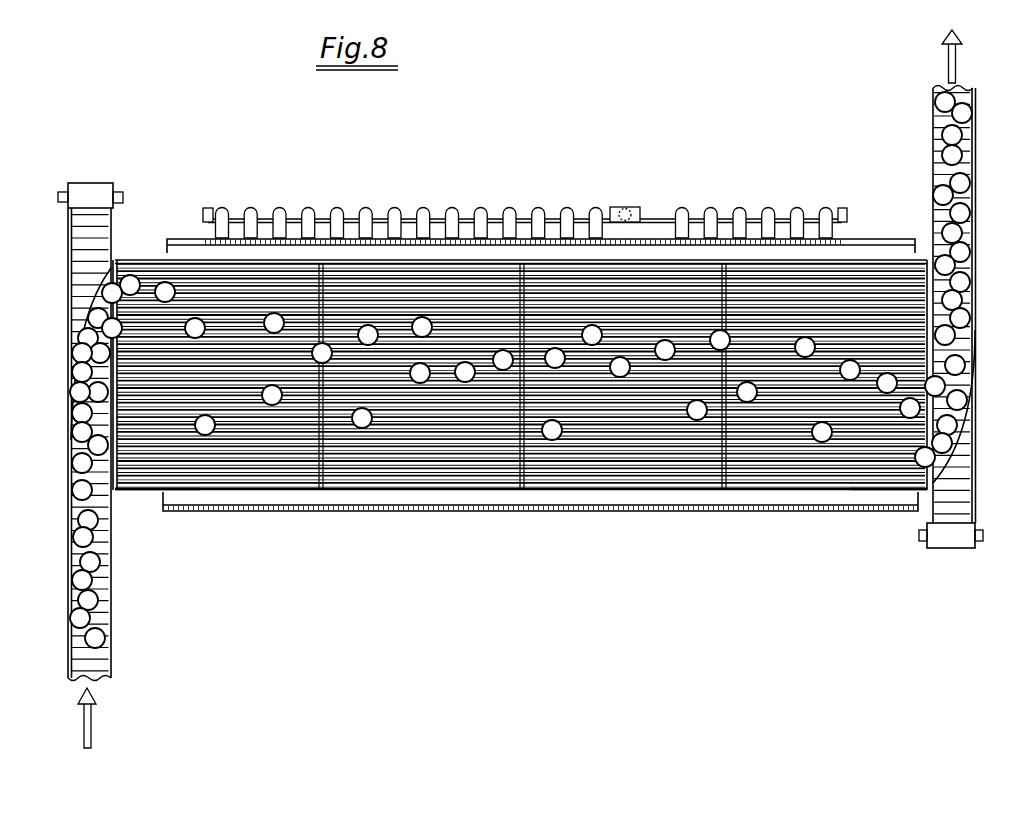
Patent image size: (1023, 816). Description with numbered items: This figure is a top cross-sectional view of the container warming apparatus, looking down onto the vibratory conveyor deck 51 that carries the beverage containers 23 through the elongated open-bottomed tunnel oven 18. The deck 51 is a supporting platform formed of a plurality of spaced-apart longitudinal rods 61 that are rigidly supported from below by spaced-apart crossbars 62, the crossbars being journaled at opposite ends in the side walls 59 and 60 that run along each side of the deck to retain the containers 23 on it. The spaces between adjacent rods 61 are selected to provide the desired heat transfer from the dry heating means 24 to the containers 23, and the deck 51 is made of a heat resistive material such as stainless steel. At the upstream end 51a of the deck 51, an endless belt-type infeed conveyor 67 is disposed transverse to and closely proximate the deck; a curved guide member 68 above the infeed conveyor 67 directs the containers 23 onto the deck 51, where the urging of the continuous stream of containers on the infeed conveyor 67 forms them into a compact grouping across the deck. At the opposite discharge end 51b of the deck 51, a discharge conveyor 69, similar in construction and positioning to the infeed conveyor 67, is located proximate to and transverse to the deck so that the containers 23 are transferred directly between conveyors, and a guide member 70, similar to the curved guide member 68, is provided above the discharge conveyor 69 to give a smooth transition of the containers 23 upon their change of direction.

The tunnel oven 18 is at (577, 506).
The beverage containers 23 is at (165, 283).
The dry heating means 24 is at (515, 178).
The vibratory conveyor deck 51 is at (864, 260).
The upstream end of deck 51a is at (150, 490).
The discharge end of deck 51b is at (906, 482).
The side wall 59 is at (633, 262).
The side wall 60 is at (693, 497).
The longitudinal rods 61 is at (565, 278).
The crossbars 62 is at (318, 476).
The infeed conveyor 67 is at (90, 200).
The curved guide member 68 is at (82, 322).
The discharge conveyor 69 is at (965, 105).
The guide member 70 is at (973, 178).